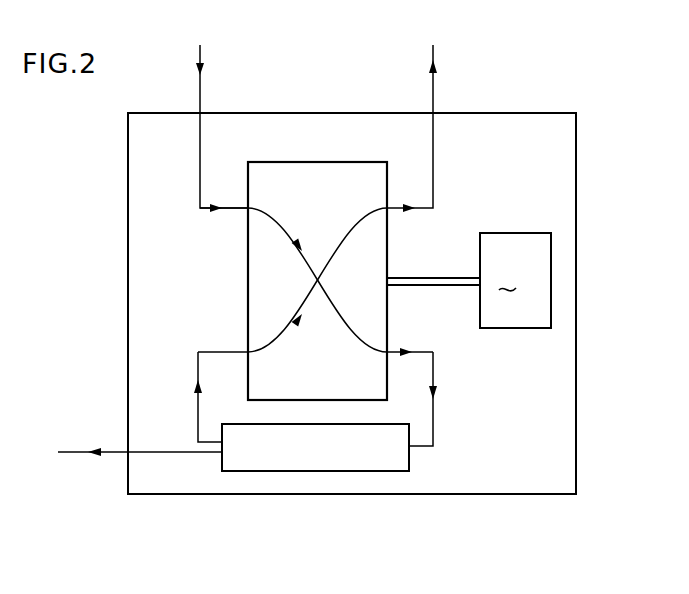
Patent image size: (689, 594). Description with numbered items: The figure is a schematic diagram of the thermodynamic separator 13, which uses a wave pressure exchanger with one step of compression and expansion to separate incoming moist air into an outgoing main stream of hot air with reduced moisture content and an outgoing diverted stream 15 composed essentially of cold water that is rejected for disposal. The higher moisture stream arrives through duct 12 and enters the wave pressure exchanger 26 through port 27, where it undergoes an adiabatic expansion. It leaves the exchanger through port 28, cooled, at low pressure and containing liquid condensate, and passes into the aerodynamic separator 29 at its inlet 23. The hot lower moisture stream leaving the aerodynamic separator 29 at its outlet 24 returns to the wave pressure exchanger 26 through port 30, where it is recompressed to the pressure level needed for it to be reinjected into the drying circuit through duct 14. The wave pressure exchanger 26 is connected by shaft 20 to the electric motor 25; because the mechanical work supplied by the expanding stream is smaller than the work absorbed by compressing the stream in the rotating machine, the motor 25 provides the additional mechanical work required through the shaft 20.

The duct 12 is at (200, 100).
The thermodynamic separator 13 is at (117, 194).
The outgoing main stream duct 14 is at (433, 100).
The outgoing diverted stream 15 is at (108, 456).
The shaft 20 is at (415, 276).
The aerodynamic separator inlet 23 is at (428, 446).
The aerodynamic separator outlet 24 is at (190, 442).
The motor 25 is at (515, 280).
The wave pressure exchanger 26 is at (313, 162).
The port 27 is at (228, 211).
The port 28 is at (414, 351).
The aerodynamic separator 29 is at (348, 462).
The port 30 is at (228, 351).